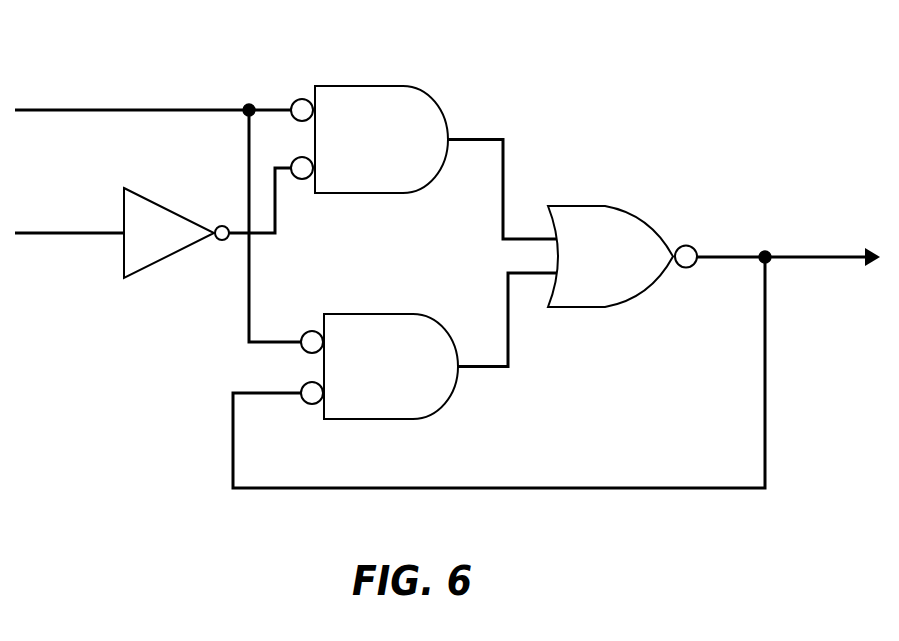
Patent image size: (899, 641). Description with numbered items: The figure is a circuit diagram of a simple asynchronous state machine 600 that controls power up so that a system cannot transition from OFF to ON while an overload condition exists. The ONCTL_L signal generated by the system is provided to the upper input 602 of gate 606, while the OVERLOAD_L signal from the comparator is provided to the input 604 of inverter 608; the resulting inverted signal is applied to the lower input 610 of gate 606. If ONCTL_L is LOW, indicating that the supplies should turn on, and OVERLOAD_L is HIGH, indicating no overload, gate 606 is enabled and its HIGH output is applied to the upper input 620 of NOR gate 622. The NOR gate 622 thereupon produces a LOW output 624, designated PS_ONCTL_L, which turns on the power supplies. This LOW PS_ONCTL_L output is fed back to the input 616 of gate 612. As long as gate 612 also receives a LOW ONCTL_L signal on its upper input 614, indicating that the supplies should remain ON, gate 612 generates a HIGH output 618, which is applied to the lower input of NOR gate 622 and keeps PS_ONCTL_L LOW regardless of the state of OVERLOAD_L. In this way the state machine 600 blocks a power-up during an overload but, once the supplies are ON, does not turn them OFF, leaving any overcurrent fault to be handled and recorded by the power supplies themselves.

The power supply on-control logic circuit 600 is at (655, 134).
The upper input 602 is at (183, 106).
The input 604 is at (69, 238).
The gate 606 is at (348, 98).
The inverter 608 is at (165, 238).
The lower input 610 is at (275, 223).
The gate 612 is at (398, 332).
The upper input 614 is at (249, 307).
The input 616 is at (233, 455).
The output 618 is at (482, 367).
The upper input 620 is at (482, 139).
The NOR gate 622 is at (615, 223).
The output 624 is at (831, 258).